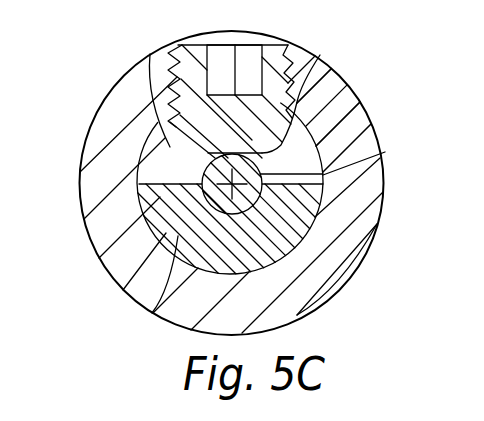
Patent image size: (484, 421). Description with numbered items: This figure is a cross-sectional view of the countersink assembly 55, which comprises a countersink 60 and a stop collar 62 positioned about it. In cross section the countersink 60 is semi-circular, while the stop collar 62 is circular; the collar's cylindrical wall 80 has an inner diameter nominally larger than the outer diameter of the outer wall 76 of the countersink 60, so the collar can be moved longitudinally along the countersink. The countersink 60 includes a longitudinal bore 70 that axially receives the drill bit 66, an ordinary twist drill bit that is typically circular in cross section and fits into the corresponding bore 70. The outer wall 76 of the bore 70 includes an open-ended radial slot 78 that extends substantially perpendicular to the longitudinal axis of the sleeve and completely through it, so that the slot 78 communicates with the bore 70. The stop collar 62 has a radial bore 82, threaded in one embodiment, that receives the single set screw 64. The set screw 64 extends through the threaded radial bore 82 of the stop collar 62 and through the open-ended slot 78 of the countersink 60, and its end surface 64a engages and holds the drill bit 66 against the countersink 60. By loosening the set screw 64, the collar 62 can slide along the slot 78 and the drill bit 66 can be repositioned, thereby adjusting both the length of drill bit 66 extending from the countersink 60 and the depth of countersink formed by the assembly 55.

The countersink assembly 55 is at (347, 310).
The countersink 60 is at (158, 203).
The stop collar 62 is at (346, 141).
The set screw 64 is at (320, 55).
The end surface 64a is at (342, 78).
The drill bit 66 is at (384, 146).
The longitudinal bore 70 is at (100, 257).
The outer wall 76 is at (152, 313).
The radial slot 78 is at (150, 55).
The cylindrical wall 80 is at (364, 229).
The radial bore 82 is at (288, 45).